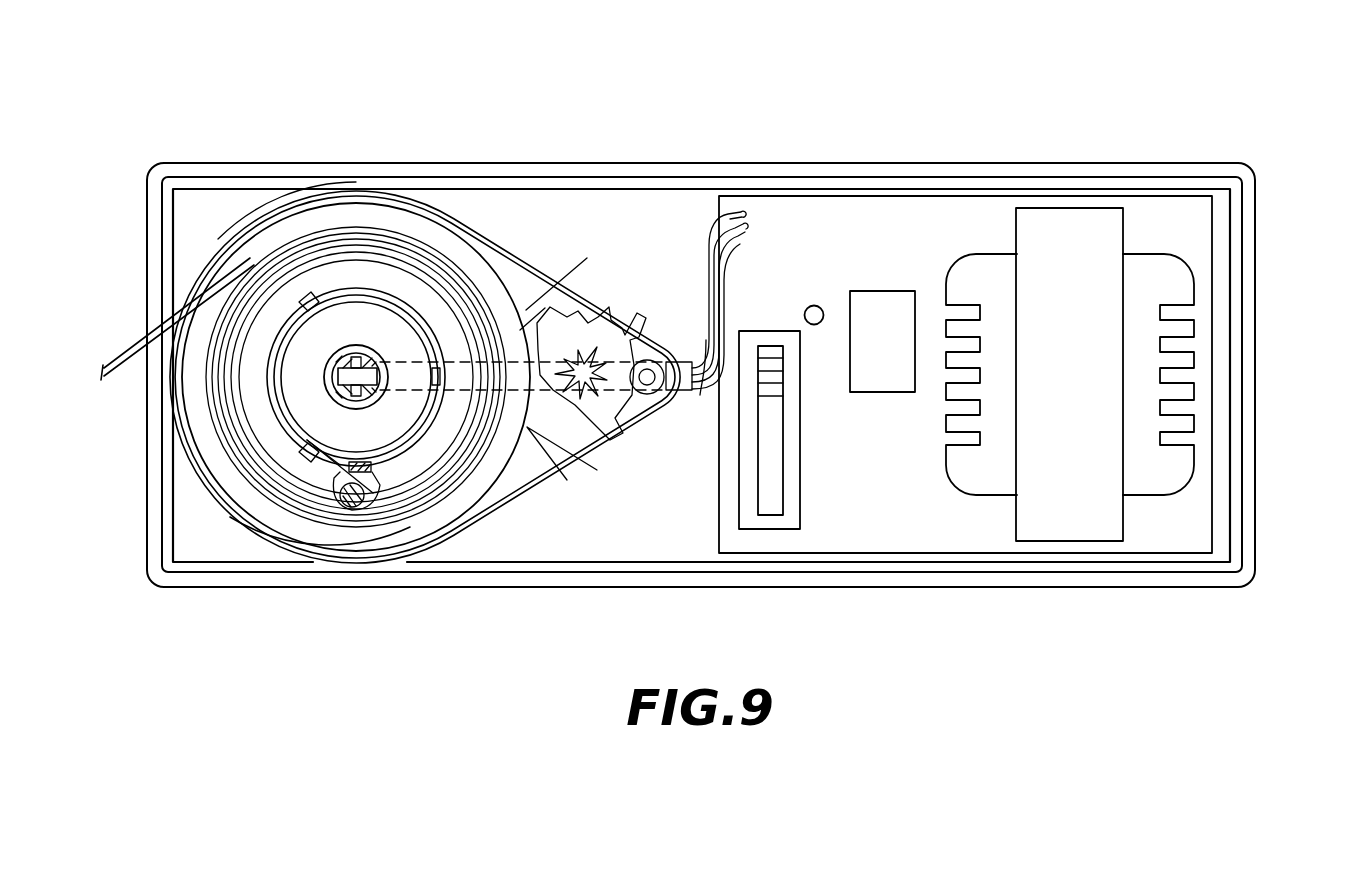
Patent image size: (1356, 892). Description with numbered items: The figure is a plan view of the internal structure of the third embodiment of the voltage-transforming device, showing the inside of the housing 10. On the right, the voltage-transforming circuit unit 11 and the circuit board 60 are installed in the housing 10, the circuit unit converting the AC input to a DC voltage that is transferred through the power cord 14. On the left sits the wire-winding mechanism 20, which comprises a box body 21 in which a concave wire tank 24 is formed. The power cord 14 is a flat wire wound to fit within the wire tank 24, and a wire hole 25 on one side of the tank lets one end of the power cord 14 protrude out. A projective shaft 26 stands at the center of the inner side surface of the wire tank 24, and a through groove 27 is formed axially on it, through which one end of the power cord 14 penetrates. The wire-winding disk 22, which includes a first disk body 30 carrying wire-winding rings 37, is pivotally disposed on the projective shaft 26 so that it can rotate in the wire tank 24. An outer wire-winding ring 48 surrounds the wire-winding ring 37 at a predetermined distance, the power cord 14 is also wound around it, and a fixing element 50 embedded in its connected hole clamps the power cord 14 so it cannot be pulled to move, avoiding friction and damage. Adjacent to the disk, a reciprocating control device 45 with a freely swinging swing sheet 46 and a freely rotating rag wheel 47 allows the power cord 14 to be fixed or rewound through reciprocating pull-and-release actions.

The housing 10 is at (1258, 393).
The voltage-transforming circuit unit 11 is at (1055, 218).
The power cord 14 is at (410, 237).
The wire-winding mechanism 20 is at (224, 231).
The box body 21 is at (502, 520).
The wire-winding disk 22 is at (515, 280).
The wire tank 24 is at (467, 520).
The wire hole 25 is at (122, 382).
The projective shaft 26 is at (333, 383).
The through groove 27 is at (350, 352).
The first disk body 30 is at (292, 522).
The wire-winding ring 37 is at (393, 453).
The reciprocating control device 45 is at (629, 275).
The swing sheet 46 is at (572, 328).
The rag wheel 47 is at (595, 405).
The outer wire-winding ring 48 is at (347, 260).
The fixing element 50 is at (350, 507).
The circuit board 60 is at (893, 215).